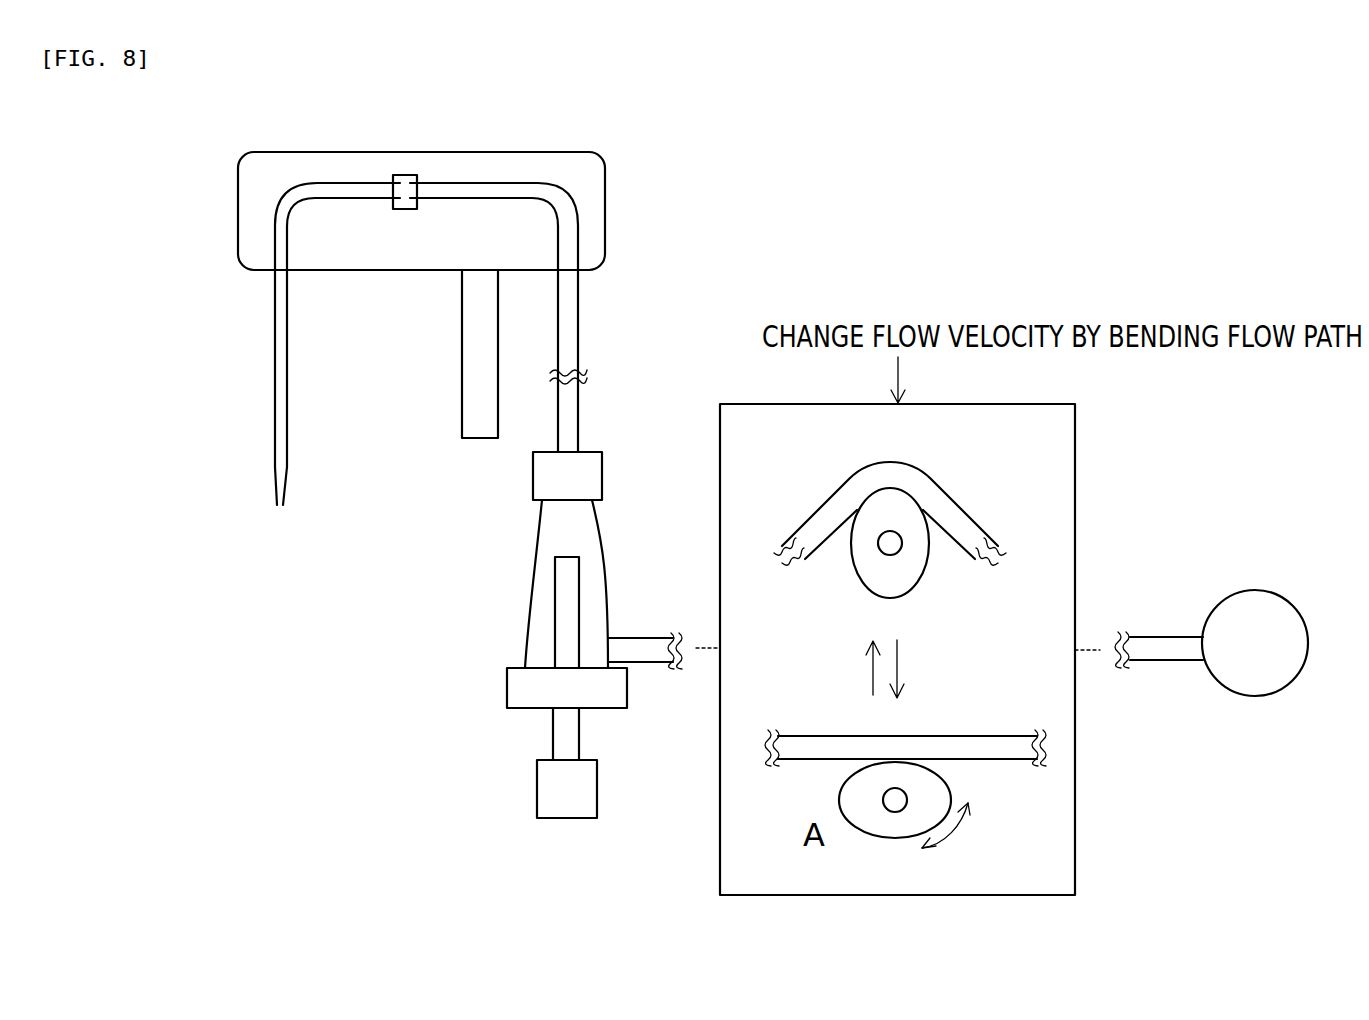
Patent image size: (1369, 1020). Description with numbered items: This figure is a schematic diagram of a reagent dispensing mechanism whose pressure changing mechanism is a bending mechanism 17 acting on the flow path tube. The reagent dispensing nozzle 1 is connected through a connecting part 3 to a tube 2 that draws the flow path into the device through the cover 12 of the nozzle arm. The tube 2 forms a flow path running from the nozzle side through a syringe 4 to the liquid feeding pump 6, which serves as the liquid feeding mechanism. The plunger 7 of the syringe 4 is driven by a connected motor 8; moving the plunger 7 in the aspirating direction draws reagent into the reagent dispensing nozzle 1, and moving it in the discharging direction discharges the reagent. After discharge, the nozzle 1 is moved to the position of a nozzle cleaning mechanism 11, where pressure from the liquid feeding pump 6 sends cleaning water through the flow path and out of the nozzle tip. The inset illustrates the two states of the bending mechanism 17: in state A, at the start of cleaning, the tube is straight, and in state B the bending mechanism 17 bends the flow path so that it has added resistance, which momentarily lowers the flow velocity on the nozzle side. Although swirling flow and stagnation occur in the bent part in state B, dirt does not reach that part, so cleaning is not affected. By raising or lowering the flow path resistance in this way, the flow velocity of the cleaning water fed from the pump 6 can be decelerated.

The reagent dispensing nozzle 1 is at (275, 380).
The tube 2 is at (473, 183).
The connecting part 3 is at (405, 175).
The syringe 4 is at (602, 550).
The liquid feeding pump 6 is at (1255, 696).
The plunger 7 is at (555, 612).
The motor 8 is at (540, 795).
The nozzle cleaning mechanism 11 is at (470, 415).
The cover of nozzle arm 12 is at (605, 185).
The bending mechanism 17 is at (912, 587).